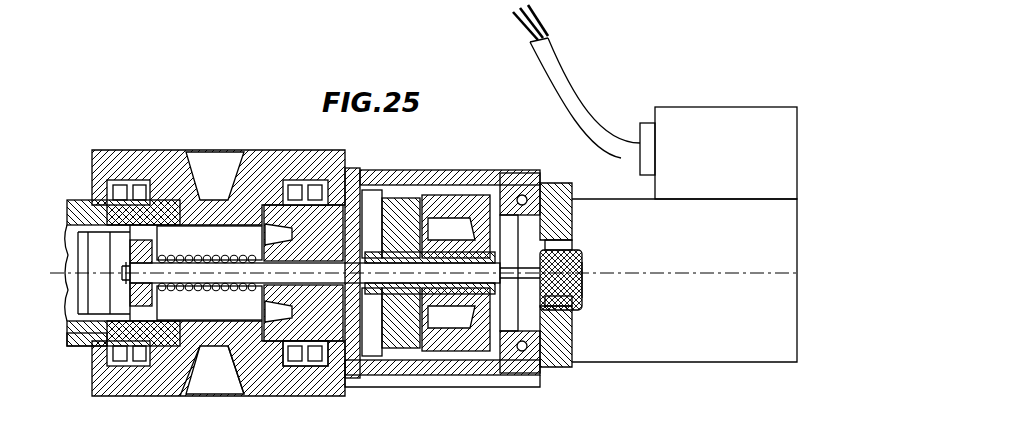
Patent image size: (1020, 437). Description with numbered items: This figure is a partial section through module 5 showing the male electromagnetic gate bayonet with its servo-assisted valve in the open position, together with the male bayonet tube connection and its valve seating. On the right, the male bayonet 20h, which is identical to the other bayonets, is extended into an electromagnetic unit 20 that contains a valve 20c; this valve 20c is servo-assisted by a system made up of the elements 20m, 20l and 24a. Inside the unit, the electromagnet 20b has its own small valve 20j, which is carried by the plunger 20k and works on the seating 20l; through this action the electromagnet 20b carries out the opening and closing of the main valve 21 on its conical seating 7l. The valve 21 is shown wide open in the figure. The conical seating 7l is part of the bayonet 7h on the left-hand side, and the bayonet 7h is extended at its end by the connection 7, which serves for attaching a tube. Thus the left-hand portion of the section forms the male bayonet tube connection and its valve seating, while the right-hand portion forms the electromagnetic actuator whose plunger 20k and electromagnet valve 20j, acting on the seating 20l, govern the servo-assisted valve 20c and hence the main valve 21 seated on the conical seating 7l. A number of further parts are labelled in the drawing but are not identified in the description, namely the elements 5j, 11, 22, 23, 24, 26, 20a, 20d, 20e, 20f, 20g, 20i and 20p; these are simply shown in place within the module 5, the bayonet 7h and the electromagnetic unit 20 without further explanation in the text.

The module 5 is at (116, 160).
The housing recess 5j is at (236, 152).
The connection 7 is at (78, 210).
The bayonet 7h is at (140, 195).
The conical seating 7l is at (112, 252).
The bearing 11 is at (200, 254).
The valve 21 is at (133, 298).
The lower flange 22 is at (110, 334).
The spring 23 is at (224, 235).
The conical wall 24 is at (226, 355).
The servo-assist system element 24a is at (194, 357).
The shaft 26 is at (351, 12).
The electromagnetic unit 20 is at (526, 176).
The motor housing flange 20a is at (475, 378).
The electromagnet 20b is at (650, 346).
The valve 20c is at (362, 358).
The stator core 20d is at (416, 198).
The stator coil 20e is at (376, 188).
The end bracket 20f is at (472, 176).
The terminal box 20g is at (700, 110).
The male bayonet 20h is at (296, 368).
The end housing 20i is at (552, 376).
The valve of the electromagnet 20j is at (556, 320).
The plunger 20k is at (587, 292).
The seating 20l is at (563, 235).
The servo-assist system element 20m is at (446, 195).
The cable 20p is at (576, 81).